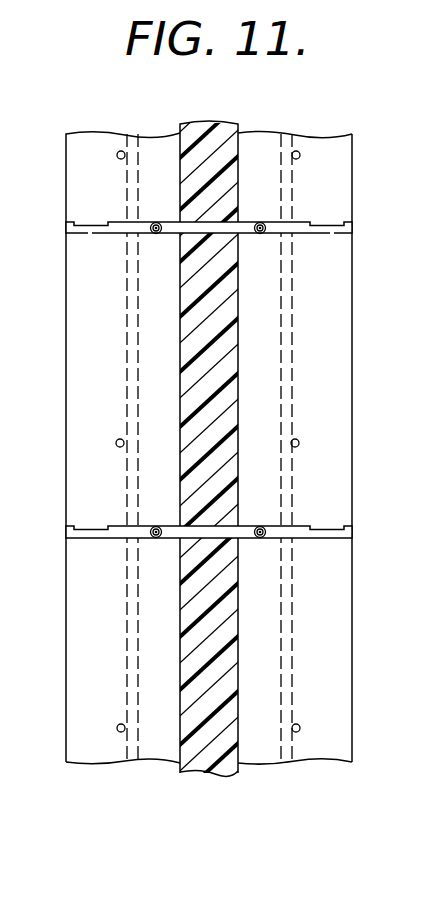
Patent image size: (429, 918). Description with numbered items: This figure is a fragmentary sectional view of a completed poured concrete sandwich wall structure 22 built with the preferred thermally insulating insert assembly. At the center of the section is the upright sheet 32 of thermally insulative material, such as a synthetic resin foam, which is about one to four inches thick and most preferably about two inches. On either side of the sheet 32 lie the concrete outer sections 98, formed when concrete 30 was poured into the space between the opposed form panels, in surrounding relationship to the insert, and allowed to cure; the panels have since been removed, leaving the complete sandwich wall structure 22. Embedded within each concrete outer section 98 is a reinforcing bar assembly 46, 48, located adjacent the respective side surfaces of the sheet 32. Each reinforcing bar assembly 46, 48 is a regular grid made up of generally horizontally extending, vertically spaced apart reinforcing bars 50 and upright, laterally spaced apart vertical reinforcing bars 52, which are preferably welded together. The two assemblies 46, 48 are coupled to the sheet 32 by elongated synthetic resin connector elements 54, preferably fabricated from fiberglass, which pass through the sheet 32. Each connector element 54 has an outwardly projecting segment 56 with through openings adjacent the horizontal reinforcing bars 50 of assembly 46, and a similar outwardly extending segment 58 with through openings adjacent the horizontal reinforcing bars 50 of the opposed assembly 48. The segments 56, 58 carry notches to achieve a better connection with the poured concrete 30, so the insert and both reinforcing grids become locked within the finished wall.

The poured concrete sandwich wall structure 22 is at (206, 397).
The concrete 30 is at (353, 420).
The sheet 32 is at (236, 106).
The reinforcing bar assembly 46 is at (320, 447).
The reinforcing bar assembly 48 is at (108, 709).
The horizontally extending reinforcing bar 50 is at (290, 326).
The vertical reinforcing bar 52 is at (300, 152).
The connector element 54 is at (222, 351).
The outwardly projecting segment 56 is at (333, 236).
The outwardly extending segment 58 is at (90, 236).
The concrete outer section 98 is at (84, 167).